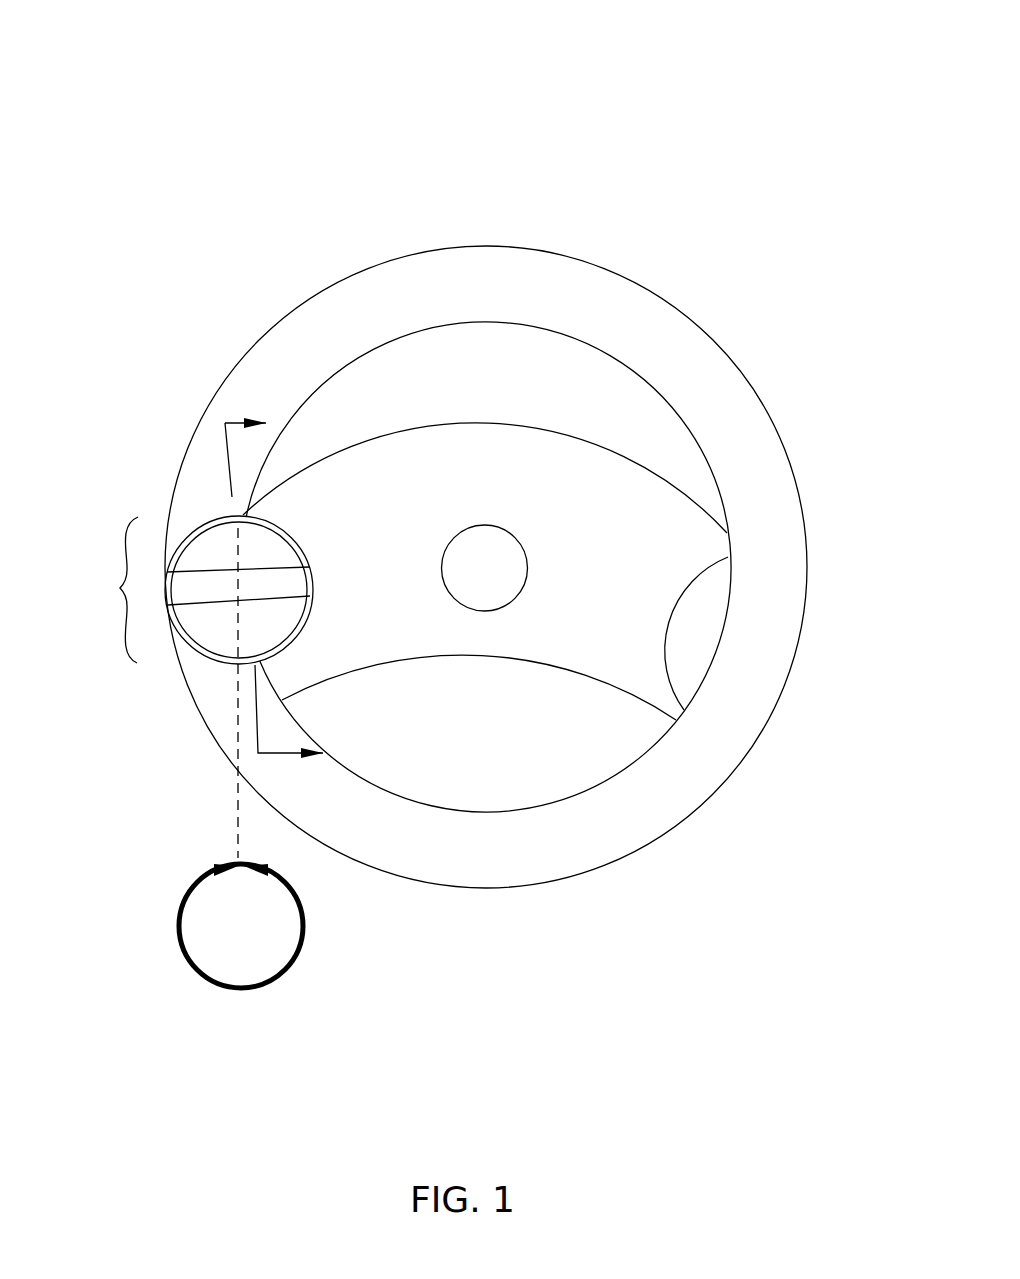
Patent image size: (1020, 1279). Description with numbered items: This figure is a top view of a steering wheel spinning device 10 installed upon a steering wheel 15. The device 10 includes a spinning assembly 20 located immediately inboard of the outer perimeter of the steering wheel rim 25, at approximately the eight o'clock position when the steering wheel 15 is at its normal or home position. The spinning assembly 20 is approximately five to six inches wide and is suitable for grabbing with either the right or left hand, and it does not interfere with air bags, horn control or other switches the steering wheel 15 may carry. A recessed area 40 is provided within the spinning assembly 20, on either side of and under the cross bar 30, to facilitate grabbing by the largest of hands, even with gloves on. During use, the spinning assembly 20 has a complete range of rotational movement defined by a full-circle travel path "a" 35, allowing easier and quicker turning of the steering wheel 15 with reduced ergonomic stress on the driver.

The steering wheel spinning device 10 is at (140, 136).
The steering wheel 15 is at (598, 537).
The spinning assembly 20 is at (120, 588).
The steering wheel rim 25 is at (422, 855).
The cross bar 30 is at (282, 585).
The travel path 35 is at (190, 960).
The recessed area 40 is at (277, 547).